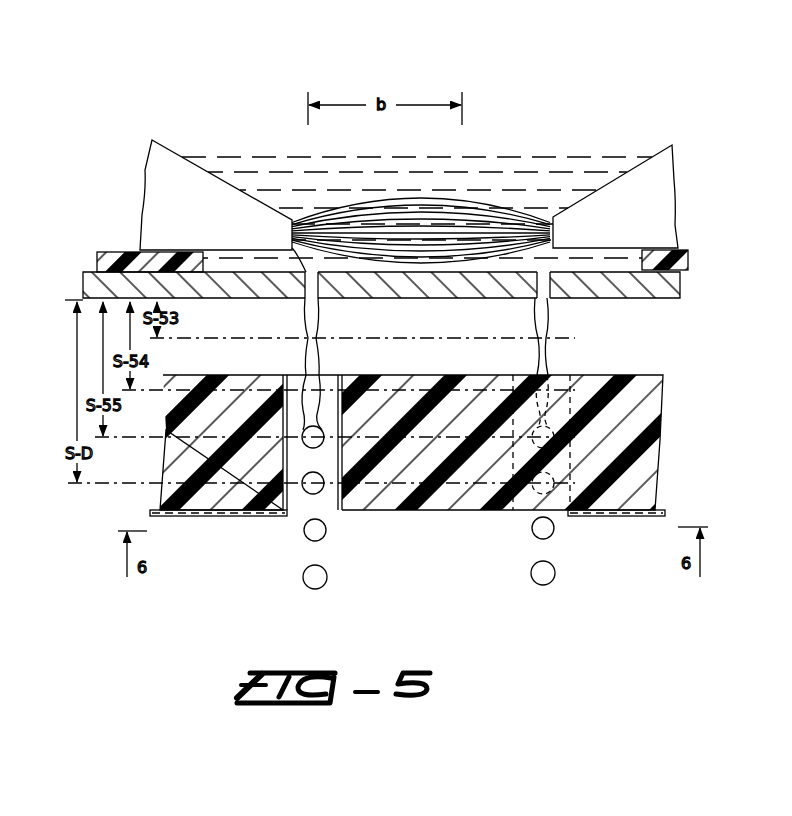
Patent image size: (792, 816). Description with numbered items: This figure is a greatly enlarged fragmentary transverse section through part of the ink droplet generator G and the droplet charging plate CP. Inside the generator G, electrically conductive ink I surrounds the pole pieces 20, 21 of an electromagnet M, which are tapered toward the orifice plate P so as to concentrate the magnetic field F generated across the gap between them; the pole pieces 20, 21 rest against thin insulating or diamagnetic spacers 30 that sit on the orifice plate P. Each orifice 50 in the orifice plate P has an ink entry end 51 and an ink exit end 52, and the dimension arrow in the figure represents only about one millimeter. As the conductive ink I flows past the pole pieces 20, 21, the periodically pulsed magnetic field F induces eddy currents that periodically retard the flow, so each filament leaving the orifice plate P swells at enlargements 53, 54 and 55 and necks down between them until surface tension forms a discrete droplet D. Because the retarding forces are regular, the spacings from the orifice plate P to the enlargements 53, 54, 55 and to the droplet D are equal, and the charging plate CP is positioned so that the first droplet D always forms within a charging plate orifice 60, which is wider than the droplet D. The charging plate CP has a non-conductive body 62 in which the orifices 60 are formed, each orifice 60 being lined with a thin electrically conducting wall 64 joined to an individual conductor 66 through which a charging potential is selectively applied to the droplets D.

The pole piece 20 is at (204, 214).
The pole piece 21 is at (633, 211).
The spacer 30 is at (117, 252).
The orifice 50 is at (330, 291).
The ink entry end 51 is at (291, 250).
The ink exit end 52 is at (305, 305).
The enlargement 53 is at (304, 331).
The enlargement 54 is at (312, 389).
The enlargement 55 is at (293, 383).
The charging plate orifice 60 is at (327, 497).
The non-conductive body 62 is at (645, 375).
The electrically conducting wall 64 is at (334, 377).
The conductor 66 is at (222, 517).
The ink droplet generator G is at (150, 104).
The electromagnet M is at (176, 144).
The ink I is at (574, 151).
The magnetic field F is at (414, 193).
The orifice plate P is at (660, 300).
The charging plate CP is at (673, 392).
The ink droplet D is at (307, 568).